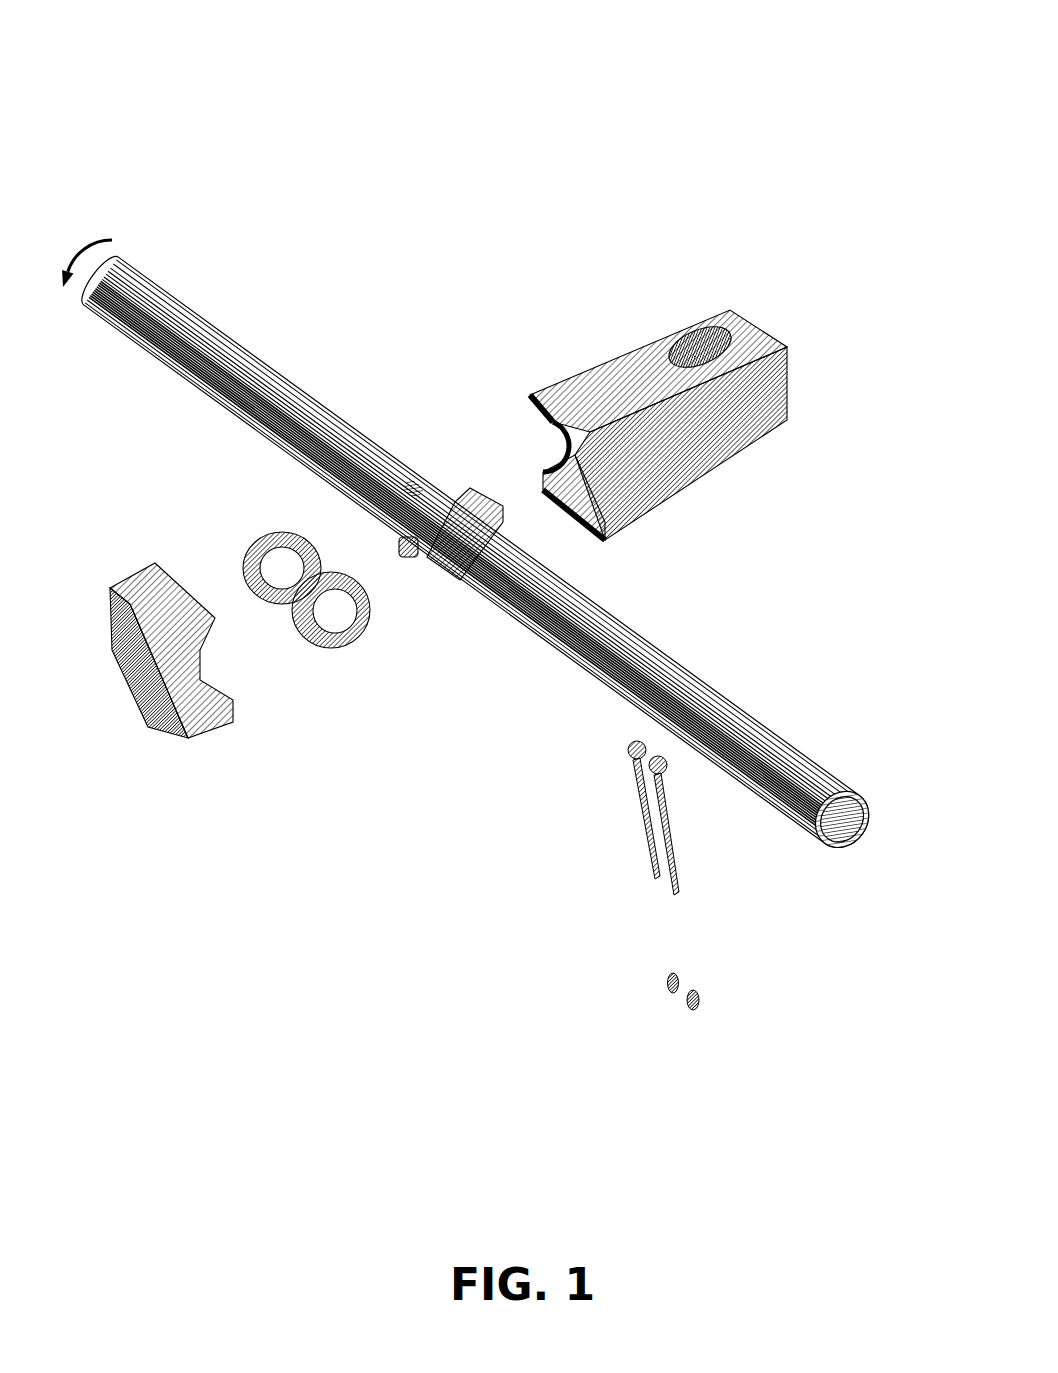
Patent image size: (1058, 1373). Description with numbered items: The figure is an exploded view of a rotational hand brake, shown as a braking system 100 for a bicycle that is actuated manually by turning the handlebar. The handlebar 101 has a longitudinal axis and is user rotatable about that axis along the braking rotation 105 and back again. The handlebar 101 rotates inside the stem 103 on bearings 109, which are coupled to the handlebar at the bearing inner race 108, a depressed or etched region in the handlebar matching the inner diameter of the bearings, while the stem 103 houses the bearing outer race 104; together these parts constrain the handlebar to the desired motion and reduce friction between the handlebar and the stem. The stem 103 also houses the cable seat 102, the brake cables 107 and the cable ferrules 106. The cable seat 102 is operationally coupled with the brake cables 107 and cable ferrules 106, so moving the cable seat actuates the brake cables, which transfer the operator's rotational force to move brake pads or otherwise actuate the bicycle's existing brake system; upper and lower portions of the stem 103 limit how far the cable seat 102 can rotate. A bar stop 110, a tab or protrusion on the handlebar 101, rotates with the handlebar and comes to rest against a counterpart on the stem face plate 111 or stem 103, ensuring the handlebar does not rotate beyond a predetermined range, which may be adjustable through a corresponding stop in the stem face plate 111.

The braking system 100 is at (866, 62).
The handlebar 101 is at (829, 752).
The cable seat 102 is at (466, 467).
The stem 103 is at (782, 320).
The bearing outer race 104 is at (591, 467).
The braking rotation 105 is at (87, 243).
The cable ferrules 106 is at (724, 994).
The brake cables 107 is at (680, 818).
The bearing inner race 108 is at (417, 505).
The bearings 109 is at (300, 628).
The bar stop 110 is at (378, 533).
The stem face plate 111 is at (178, 749).